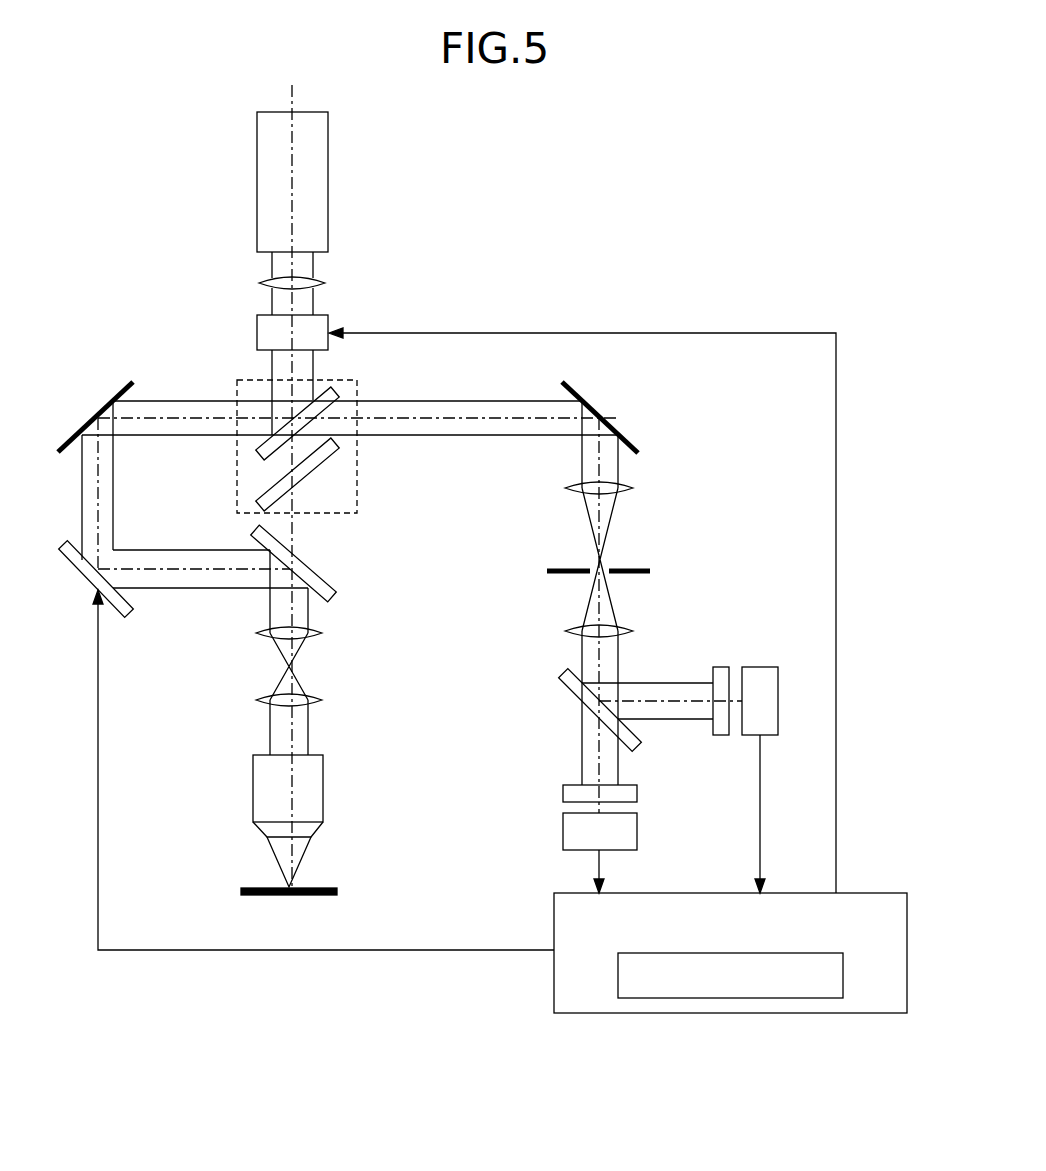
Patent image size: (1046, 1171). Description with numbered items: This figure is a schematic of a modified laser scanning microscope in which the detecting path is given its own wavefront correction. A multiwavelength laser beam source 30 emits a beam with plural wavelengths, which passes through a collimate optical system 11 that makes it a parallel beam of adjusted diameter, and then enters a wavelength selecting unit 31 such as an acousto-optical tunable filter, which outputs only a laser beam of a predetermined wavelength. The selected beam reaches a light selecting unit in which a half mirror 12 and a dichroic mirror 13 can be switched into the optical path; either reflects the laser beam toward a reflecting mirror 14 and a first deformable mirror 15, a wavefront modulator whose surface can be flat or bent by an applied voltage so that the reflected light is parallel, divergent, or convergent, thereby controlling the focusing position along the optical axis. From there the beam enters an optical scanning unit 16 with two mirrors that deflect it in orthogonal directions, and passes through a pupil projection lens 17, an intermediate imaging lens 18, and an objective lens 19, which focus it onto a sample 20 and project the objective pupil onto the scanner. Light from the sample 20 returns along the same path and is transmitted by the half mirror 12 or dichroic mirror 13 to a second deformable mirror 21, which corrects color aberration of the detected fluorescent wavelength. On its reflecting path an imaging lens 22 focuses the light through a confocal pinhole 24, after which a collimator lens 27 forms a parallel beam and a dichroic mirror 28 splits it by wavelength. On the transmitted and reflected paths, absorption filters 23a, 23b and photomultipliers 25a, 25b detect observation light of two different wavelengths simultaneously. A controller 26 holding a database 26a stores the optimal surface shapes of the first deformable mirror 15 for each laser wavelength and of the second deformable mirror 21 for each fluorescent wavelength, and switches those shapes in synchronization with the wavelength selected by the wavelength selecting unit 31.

The multiwavelength laser beam source 30 is at (320, 197).
The collimate optical system 11 is at (305, 287).
The wavelength selecting unit 31 is at (318, 327).
The half mirror 12 is at (332, 393).
The dichroic mirror 13 is at (324, 449).
The reflecting mirror 14 is at (105, 404).
The first deformable mirror 15 is at (80, 562).
The optical scanning unit 16 is at (302, 572).
The pupil projection lens 17 is at (310, 632).
The intermediate imaging lens 18 is at (305, 702).
The objective lens 19 is at (315, 808).
The sample 20 is at (320, 888).
The second deformable mirror 21 is at (597, 403).
The imaging lens 22 is at (625, 488).
The confocal pinhole 24 is at (655, 571).
The collimator lens 27 is at (578, 630).
The dichroic mirror 28 is at (565, 678).
The absorption filter 23a is at (718, 668).
The photomultiplier 25a is at (762, 671).
The absorption filter 23b is at (565, 792).
The photomultiplier 25b is at (565, 830).
The controller 26 is at (907, 968).
The database 26a is at (843, 972).